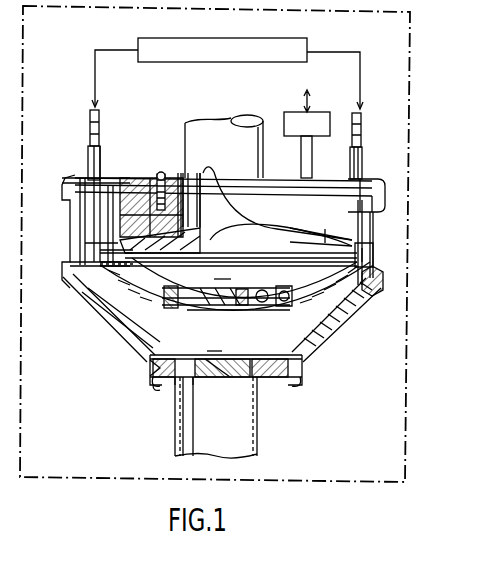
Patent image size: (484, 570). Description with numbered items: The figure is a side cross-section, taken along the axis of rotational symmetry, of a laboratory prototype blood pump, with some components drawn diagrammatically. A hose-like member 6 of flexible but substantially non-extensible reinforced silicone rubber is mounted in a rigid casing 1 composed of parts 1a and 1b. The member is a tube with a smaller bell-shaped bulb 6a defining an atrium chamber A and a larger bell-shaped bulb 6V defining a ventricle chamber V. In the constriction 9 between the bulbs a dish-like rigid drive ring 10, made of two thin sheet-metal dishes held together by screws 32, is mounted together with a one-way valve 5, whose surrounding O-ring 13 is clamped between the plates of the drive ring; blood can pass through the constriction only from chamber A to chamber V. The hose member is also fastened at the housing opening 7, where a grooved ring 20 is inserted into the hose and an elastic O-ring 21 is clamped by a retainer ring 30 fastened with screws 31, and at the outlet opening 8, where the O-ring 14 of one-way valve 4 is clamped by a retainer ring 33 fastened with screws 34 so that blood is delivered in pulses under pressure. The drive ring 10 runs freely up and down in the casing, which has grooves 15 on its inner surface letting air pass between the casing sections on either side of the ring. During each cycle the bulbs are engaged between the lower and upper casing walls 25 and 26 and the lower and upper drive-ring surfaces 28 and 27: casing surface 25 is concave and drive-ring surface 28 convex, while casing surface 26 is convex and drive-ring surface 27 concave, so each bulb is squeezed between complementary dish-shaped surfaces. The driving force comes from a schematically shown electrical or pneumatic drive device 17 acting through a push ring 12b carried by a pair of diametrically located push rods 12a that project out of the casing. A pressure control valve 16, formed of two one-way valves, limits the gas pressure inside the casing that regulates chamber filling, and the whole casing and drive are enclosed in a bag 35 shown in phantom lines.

The casing 1 is at (383, 216).
The casing part 1a is at (386, 196).
The casing part 1b is at (310, 355).
The valve 4 is at (212, 378).
The valve 5 is at (243, 310).
The hose-like member 6 is at (266, 434).
The smaller bulb 6a is at (274, 231).
The larger bulb 6V is at (346, 318).
The housing opening 7 is at (190, 204).
The housing opening 8 is at (187, 390).
The constriction 9 is at (258, 310).
The drive ring 10 is at (369, 257).
The push rods 12a is at (360, 158).
The push ring 12b is at (351, 234).
The O-ring 13 is at (168, 311).
The O-ring 14 is at (258, 380).
The grooves 15 is at (120, 235).
The pressure control valve 16 is at (314, 112).
The drive device 17 is at (167, 63).
The ring 20 is at (200, 166).
The O-ring 21 is at (180, 173).
The lower wall 25 is at (123, 320).
The upper wall 26 is at (128, 205).
The upper surface of drive ring 27 is at (150, 280).
The lower surface of drive ring 28 is at (123, 310).
The retainer ring 30 is at (160, 176).
The screws 31 is at (158, 170).
The screws 32 is at (287, 310).
The retainer ring 33 is at (145, 370).
The screws 34 is at (155, 382).
The enclosure 35 is at (407, 483).
The atrium chamber A is at (223, 268).
The ventricle chamber V is at (214, 340).